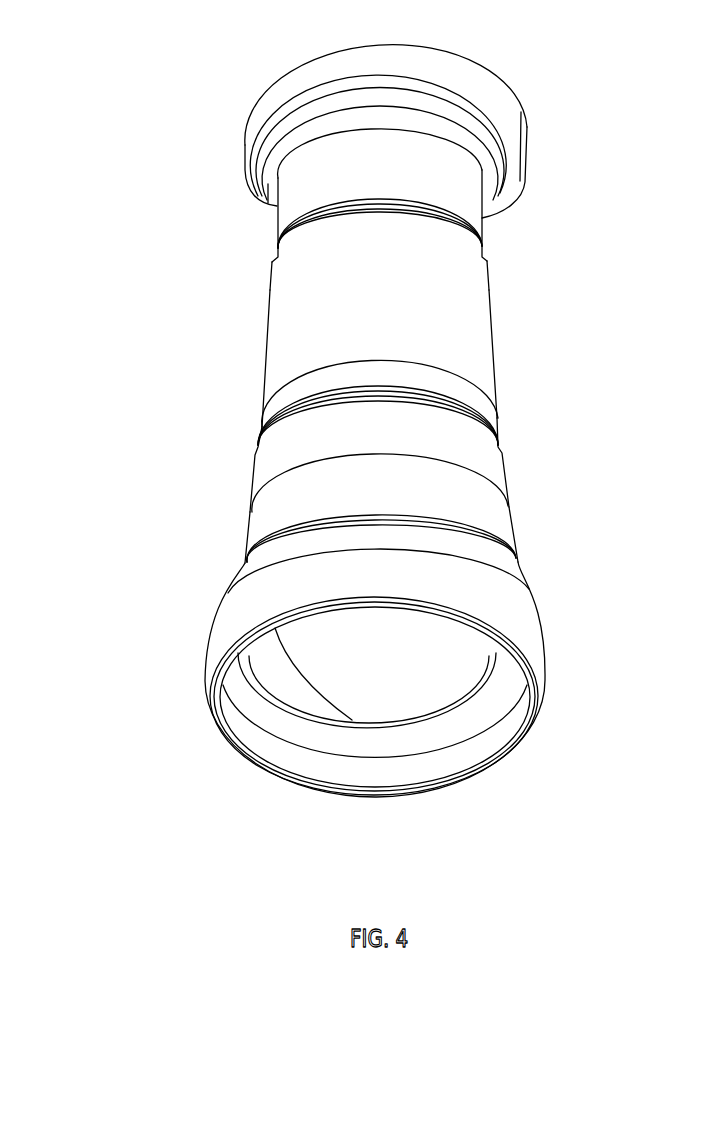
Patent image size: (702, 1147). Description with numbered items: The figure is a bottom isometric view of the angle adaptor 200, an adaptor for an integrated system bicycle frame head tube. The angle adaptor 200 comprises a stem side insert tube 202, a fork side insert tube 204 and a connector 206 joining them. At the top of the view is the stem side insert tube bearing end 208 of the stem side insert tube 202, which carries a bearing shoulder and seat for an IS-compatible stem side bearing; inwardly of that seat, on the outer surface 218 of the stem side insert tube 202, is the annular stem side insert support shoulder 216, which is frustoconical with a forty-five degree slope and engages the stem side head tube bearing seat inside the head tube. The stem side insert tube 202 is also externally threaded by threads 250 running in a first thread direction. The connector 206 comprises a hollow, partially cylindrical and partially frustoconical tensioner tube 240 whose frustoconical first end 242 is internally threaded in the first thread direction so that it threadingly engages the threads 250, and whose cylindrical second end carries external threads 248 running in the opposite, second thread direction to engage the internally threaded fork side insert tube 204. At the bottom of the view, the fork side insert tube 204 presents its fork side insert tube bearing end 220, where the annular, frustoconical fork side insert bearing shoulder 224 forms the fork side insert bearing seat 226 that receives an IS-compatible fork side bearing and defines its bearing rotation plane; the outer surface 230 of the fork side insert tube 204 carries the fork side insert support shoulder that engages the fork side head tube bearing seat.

The angle adaptor 200 is at (134, 320).
The stem side insert tube 202 is at (266, 228).
The fork side insert tube 204 is at (245, 539).
The connector 206 is at (259, 380).
The stem side insert tube bearing end 208 is at (276, 66).
The stem side insert support shoulder 216 is at (273, 212).
The outer surface 218 is at (403, 185).
The fork side insert tube bearing end 220 is at (254, 771).
The fork side insert bearing shoulder 224 is at (252, 702).
The fork side insert bearing seat 226 is at (312, 738).
The outer surface 230 is at (403, 507).
The tensioner tube 240 is at (290, 336).
The first end 242 is at (267, 258).
The threads 248 is at (402, 390).
The threads 250 is at (372, 213).